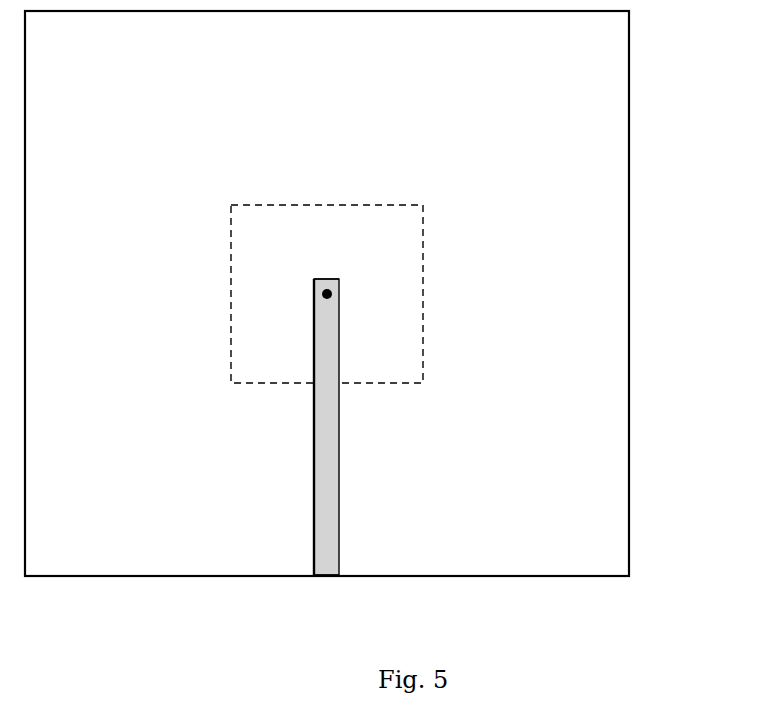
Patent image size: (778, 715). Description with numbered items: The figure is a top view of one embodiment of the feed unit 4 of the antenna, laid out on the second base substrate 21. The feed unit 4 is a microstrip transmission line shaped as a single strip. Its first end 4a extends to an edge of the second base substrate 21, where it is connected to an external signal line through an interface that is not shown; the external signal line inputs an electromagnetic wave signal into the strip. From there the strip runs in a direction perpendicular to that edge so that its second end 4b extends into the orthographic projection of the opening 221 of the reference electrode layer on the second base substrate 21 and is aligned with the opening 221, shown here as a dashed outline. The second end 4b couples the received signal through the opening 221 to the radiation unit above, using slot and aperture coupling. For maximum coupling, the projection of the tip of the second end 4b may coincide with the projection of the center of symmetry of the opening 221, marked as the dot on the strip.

The second base substrate 21 is at (613, 173).
The opening 221 is at (385, 205).
The feed unit 4 is at (333, 468).
The first end 4a is at (331, 570).
The second end 4b is at (327, 279).